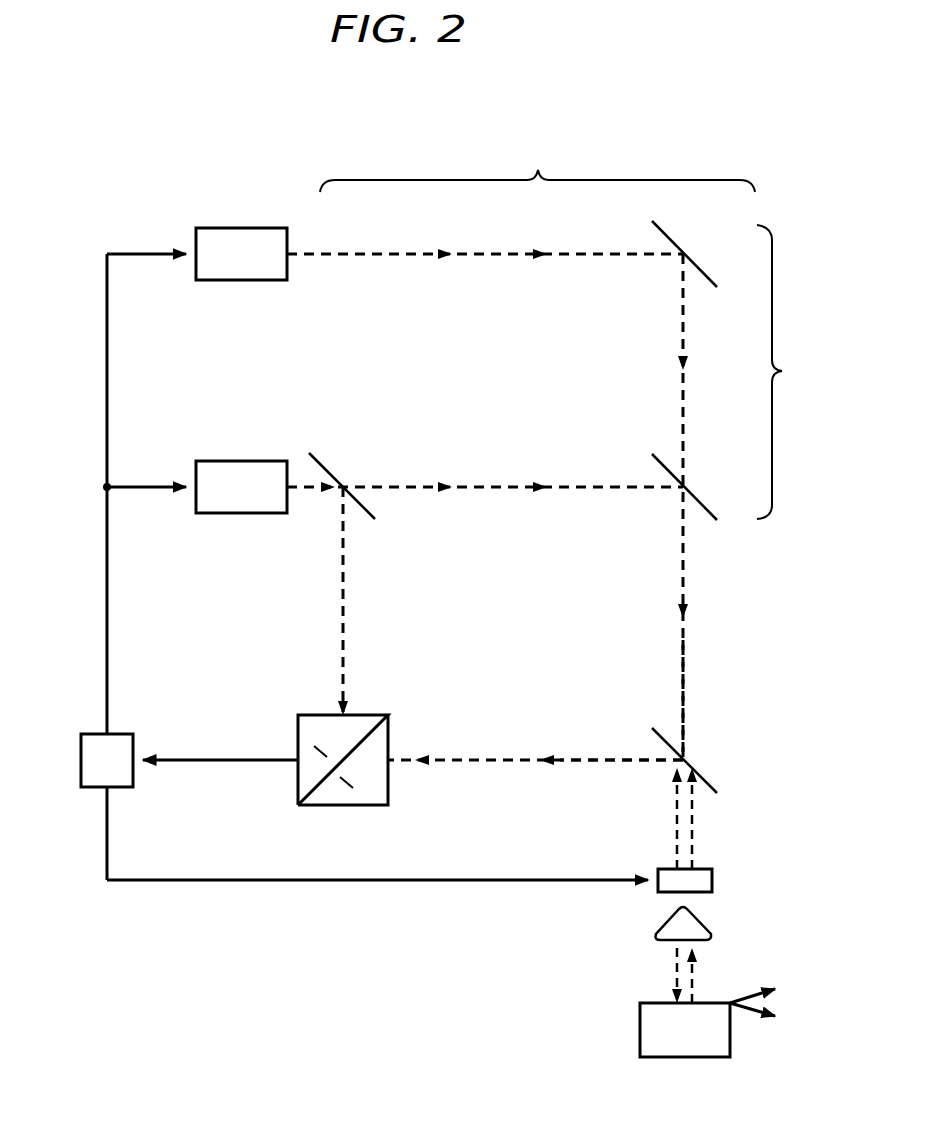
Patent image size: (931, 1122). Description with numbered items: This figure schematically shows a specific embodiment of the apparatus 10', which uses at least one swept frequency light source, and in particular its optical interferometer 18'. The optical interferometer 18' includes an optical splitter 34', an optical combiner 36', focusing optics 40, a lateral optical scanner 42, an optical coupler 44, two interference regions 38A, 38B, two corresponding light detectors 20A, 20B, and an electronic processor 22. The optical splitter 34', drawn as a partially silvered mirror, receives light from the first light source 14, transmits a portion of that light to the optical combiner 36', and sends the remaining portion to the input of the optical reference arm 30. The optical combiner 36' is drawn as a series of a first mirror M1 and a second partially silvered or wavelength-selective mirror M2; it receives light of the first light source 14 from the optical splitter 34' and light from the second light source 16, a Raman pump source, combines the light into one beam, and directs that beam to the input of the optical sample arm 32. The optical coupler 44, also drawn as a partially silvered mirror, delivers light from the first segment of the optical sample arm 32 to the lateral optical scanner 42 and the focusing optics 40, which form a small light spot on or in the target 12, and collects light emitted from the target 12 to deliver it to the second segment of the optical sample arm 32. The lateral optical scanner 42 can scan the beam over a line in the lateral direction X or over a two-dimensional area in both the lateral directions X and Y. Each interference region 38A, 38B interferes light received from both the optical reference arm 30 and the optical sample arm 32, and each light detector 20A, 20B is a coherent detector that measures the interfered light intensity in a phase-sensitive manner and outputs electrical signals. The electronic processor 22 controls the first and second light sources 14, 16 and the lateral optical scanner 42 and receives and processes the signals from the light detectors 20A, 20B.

The apparatus 10' is at (375, 474).
The target 12 is at (699, 1045).
The first light source 14 is at (255, 501).
The second light source 16 is at (255, 268).
The optical interferometer 18' is at (537, 165).
The light detector 20A is at (318, 755).
The light detector 20B is at (345, 785).
The electronic processor 22 is at (121, 774).
The optical reference arm 30 is at (356, 600).
The optical sample arm 32 is at (666, 662).
The optical splitter 34' is at (349, 472).
The optical combiner 36' is at (788, 372).
The interference region 38A is at (327, 720).
The interference region 38B is at (373, 782).
The focusing optics 40 is at (712, 931).
The lateral optical scanner 42 is at (714, 882).
The optical coupler 44 is at (700, 775).
The first mirror M1 is at (678, 239).
The second partially silvered or wavelength-selective mirror M2 is at (700, 500).
The lateral x-direction X is at (772, 987).
The lateral y-direction Y is at (771, 1019).